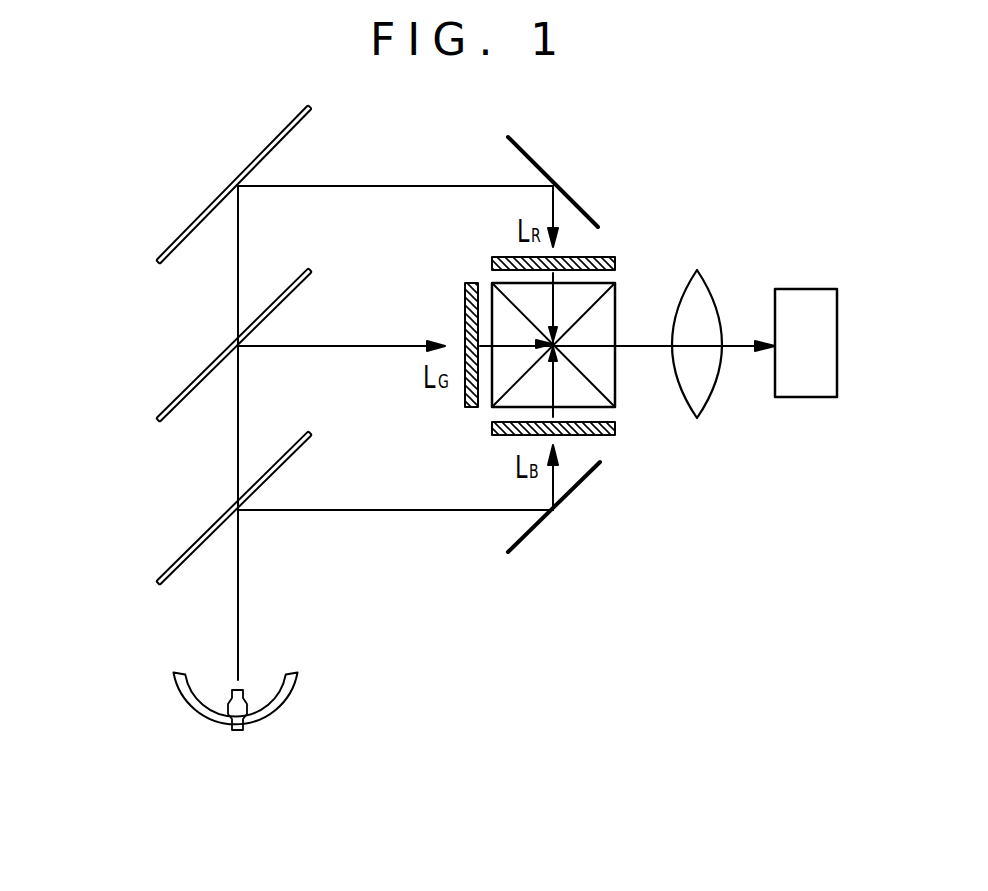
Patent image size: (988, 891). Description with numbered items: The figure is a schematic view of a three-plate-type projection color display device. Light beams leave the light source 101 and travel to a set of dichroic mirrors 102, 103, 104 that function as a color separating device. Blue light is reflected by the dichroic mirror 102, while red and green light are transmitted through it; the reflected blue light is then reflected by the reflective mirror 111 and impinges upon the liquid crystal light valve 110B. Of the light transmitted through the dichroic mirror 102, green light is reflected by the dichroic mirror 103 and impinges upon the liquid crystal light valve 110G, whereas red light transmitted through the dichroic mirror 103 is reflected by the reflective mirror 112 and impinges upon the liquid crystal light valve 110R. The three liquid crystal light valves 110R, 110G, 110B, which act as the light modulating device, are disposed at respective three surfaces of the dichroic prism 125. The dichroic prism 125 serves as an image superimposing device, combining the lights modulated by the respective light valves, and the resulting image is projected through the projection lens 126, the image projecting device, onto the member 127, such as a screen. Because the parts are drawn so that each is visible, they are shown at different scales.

The light source 101 is at (174, 690).
The dichroic mirror 102 is at (168, 568).
The dichroic mirror 103 is at (193, 380).
The dichroic mirror 104 is at (193, 223).
The liquid crystal light valve 110R is at (612, 257).
The liquid crystal light valve 110G is at (467, 283).
The liquid crystal light valve 110B is at (600, 432).
The reflective mirror 111 is at (522, 542).
The reflective mirror 112 is at (572, 190).
The dichroic prism 125 is at (607, 308).
The projection lens 126 is at (703, 400).
The member to project an image thereon 127 is at (808, 387).